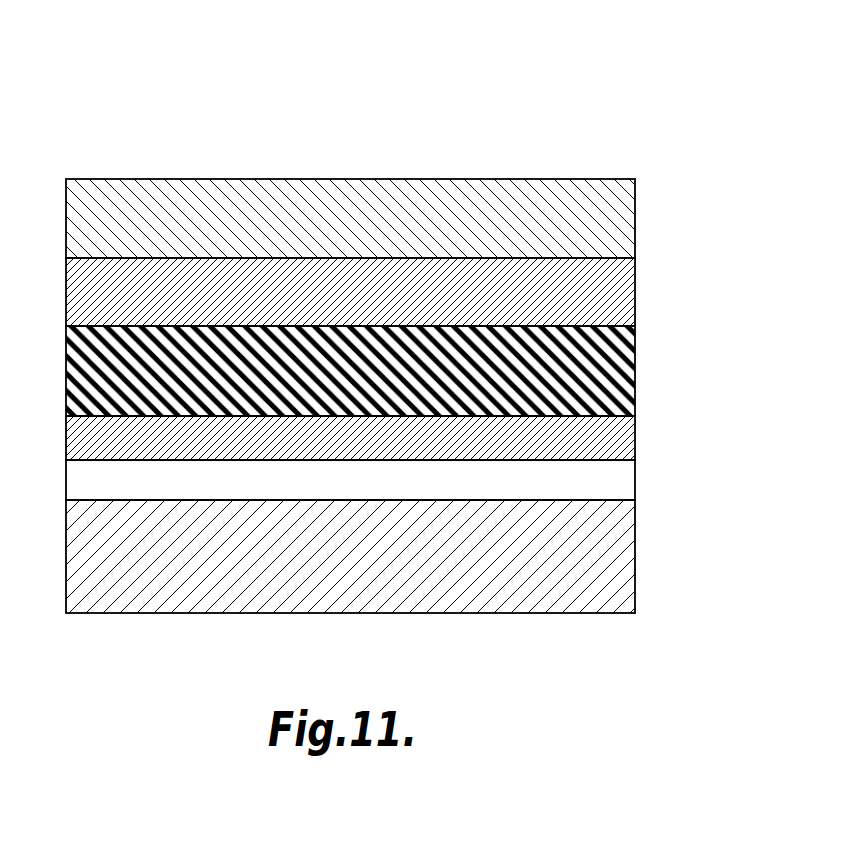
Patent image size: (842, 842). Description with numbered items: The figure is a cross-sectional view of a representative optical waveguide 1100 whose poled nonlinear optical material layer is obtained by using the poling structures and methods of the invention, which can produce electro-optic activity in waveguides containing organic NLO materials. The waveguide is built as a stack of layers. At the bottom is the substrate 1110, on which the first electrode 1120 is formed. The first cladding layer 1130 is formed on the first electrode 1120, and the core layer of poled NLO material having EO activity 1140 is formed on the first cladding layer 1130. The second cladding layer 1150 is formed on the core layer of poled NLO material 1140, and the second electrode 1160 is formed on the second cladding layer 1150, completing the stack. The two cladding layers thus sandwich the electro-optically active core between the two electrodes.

The optical waveguide 1100 is at (378, 323).
The substrate 1110 is at (635, 558).
The first electrode 1120 is at (635, 482).
The first cladding layer 1130 is at (635, 435).
The core layer of poled NLO material 1140 is at (635, 368).
The second cladding layer 1150 is at (635, 285).
The second electrode 1160 is at (635, 218).